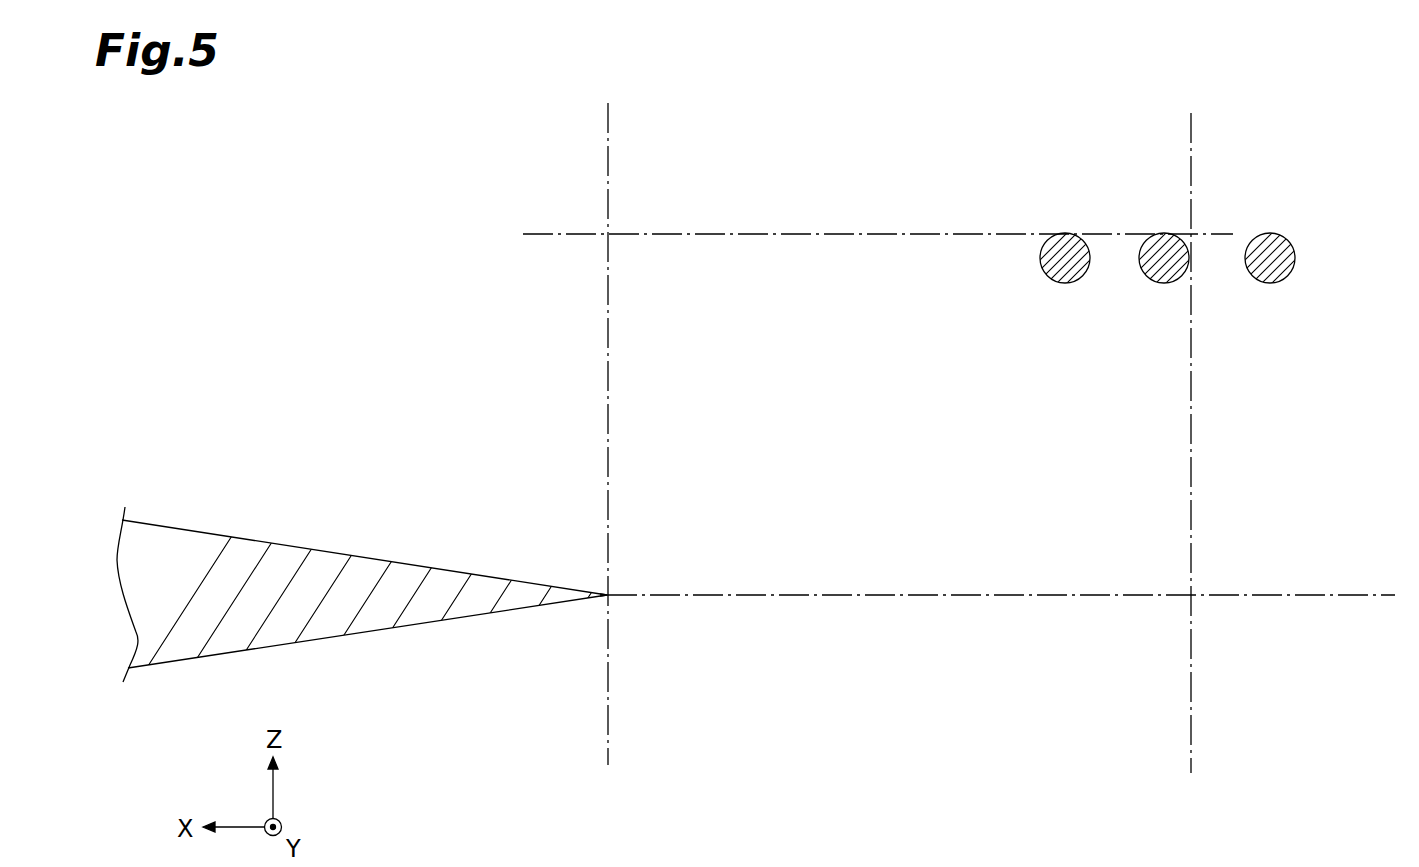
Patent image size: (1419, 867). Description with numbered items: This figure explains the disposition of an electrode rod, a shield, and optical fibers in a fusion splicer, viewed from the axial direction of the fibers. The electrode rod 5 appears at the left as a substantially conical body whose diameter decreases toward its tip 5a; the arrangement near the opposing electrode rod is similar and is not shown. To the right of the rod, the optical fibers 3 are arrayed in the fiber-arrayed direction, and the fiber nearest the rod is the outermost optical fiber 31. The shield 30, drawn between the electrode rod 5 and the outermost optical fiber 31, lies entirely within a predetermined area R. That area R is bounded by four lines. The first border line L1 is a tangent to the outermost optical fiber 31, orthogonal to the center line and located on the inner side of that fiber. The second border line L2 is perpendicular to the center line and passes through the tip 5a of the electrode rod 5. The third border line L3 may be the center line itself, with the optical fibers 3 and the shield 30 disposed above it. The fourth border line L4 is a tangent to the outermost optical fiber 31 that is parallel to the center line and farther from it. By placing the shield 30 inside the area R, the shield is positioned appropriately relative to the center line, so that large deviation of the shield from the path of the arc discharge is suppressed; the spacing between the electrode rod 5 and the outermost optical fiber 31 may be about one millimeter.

The electrode rod 5 is at (328, 548).
The tip 5a is at (603, 598).
The optical fibers 3 is at (1270, 234).
The shield 30 is at (1066, 234).
The outermost optical fiber 31 is at (1164, 234).
The first border line L1 is at (1192, 423).
The second border line L2 is at (606, 357).
The third border line L3 is at (884, 597).
The fourth border line L4 is at (832, 234).
The predetermined area R is at (693, 302).